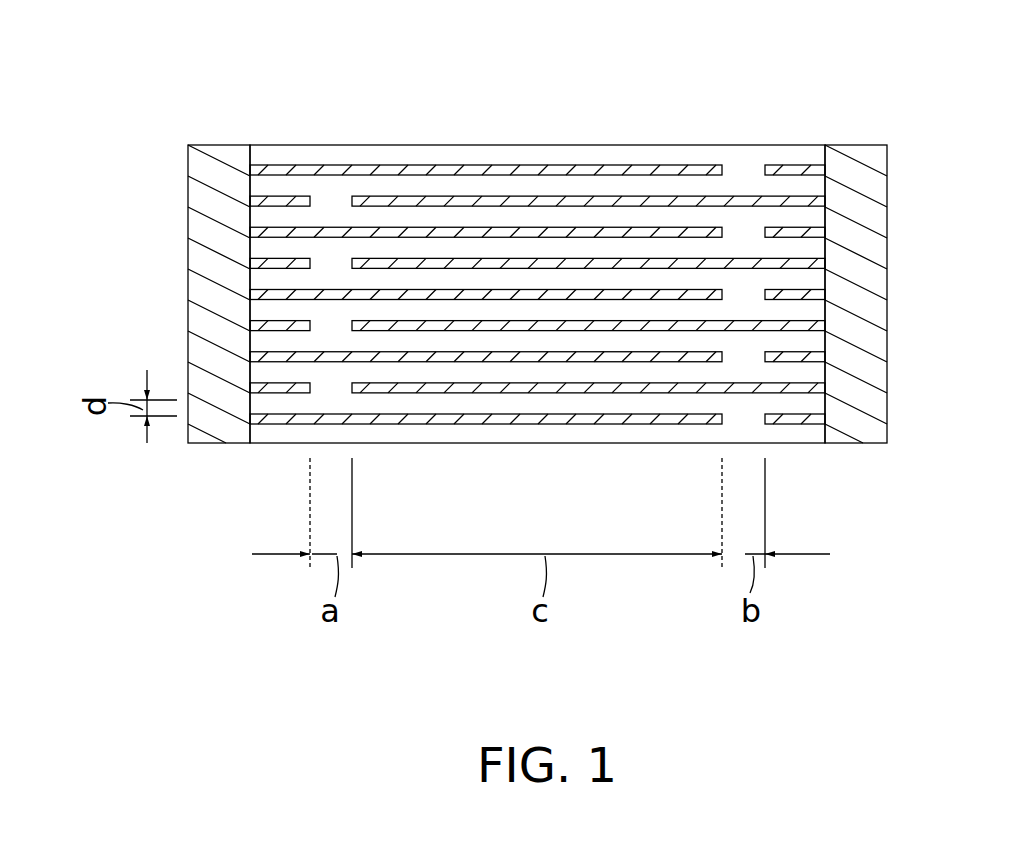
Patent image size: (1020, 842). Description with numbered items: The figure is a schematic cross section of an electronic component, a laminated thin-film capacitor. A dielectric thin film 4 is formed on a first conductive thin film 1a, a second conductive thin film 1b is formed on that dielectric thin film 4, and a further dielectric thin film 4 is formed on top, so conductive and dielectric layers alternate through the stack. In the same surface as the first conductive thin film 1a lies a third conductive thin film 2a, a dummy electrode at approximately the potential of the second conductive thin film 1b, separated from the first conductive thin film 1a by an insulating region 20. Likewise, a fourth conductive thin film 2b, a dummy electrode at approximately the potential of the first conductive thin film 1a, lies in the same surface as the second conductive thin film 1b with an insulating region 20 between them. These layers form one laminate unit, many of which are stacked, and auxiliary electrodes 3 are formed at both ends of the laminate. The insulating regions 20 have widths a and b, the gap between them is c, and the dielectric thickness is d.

The first conductive thin film 1a is at (373, 168).
The second conductive thin film 1b is at (480, 203).
The third conductive thin film 2a is at (805, 292).
The fourth conductive thin film 2b is at (263, 197).
The auxiliary electrode 3 is at (215, 413).
The dielectric thin film 4 is at (658, 275).
The insulating region 20 is at (322, 198).